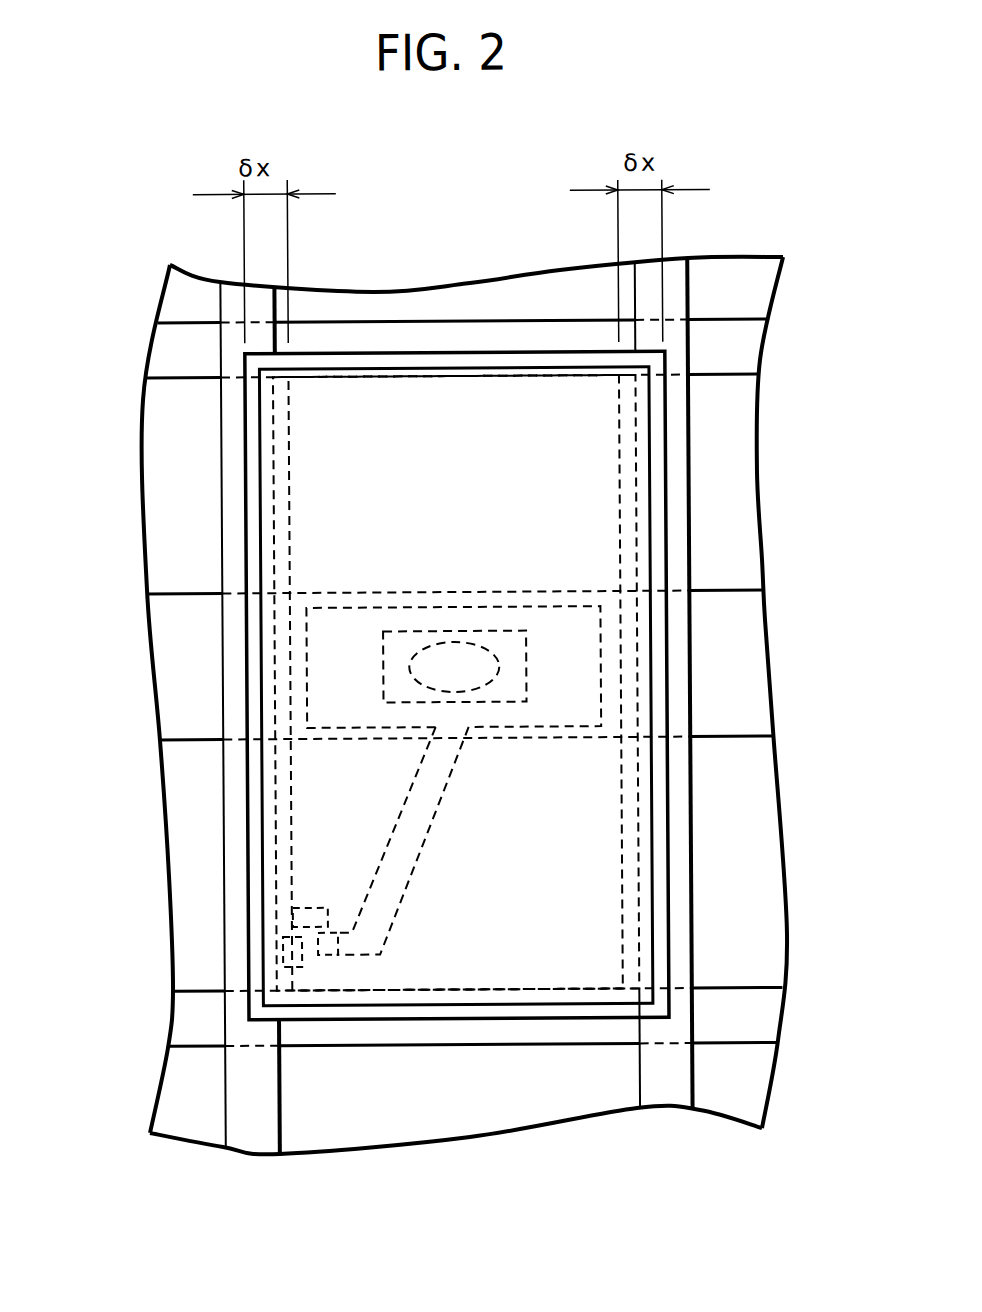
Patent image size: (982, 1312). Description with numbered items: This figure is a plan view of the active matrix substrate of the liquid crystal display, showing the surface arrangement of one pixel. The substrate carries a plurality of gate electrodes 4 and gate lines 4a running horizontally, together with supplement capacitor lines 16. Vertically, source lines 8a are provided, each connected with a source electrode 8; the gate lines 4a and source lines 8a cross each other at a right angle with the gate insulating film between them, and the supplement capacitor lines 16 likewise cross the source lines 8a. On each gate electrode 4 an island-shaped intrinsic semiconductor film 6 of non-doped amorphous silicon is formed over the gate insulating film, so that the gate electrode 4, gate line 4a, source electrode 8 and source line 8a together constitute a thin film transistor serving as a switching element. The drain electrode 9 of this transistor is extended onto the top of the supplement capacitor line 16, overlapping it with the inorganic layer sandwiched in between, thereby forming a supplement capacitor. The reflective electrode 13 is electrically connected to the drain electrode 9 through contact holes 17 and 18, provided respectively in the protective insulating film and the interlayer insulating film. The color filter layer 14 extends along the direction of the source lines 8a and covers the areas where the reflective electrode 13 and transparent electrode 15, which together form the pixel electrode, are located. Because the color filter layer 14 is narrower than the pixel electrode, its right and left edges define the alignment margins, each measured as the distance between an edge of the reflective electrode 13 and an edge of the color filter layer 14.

The gate electrode 4 is at (293, 907).
The gate line 4a is at (437, 1026).
The intrinsic semiconductor film 6 is at (260, 1003).
The source electrode 8 is at (283, 937).
The source line 8a is at (237, 966).
The drain electrode 9 is at (383, 861).
The reflective electrode 13 is at (256, 778).
The color filter layer 14 is at (591, 818).
The transparent electrode 15 is at (263, 483).
The supplement capacitor line 16 is at (735, 657).
The contact hole 17 is at (398, 631).
The contact hole 18 is at (456, 655).